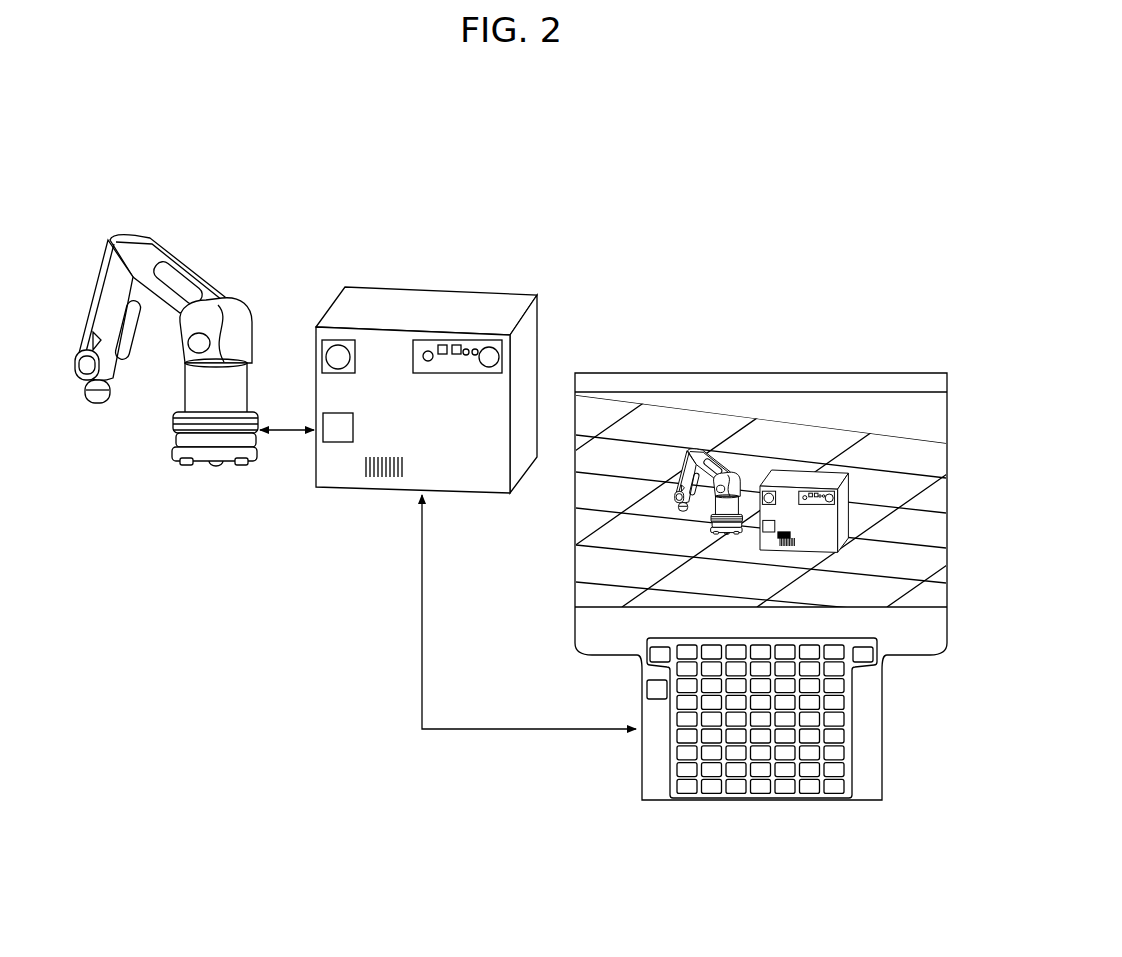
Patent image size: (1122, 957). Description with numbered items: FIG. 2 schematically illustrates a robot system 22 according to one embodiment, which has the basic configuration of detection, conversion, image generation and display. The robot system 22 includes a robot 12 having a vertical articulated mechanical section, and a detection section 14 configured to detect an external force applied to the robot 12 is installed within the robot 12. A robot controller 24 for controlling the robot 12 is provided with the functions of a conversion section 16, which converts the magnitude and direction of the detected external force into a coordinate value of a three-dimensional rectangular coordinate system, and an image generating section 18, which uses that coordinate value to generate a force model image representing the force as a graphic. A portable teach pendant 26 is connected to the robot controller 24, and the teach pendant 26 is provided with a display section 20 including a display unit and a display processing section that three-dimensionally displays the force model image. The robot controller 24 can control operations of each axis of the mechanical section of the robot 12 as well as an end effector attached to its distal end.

The robot 12 is at (166, 322).
The detection section 14 is at (176, 393).
The conversion section 16 is at (439, 337).
The image generating section 18 is at (439, 338).
The display section 20 is at (737, 613).
The robot system 22 is at (298, 765).
The robot controller 24 is at (380, 283).
The teach pendant 26 is at (760, 806).